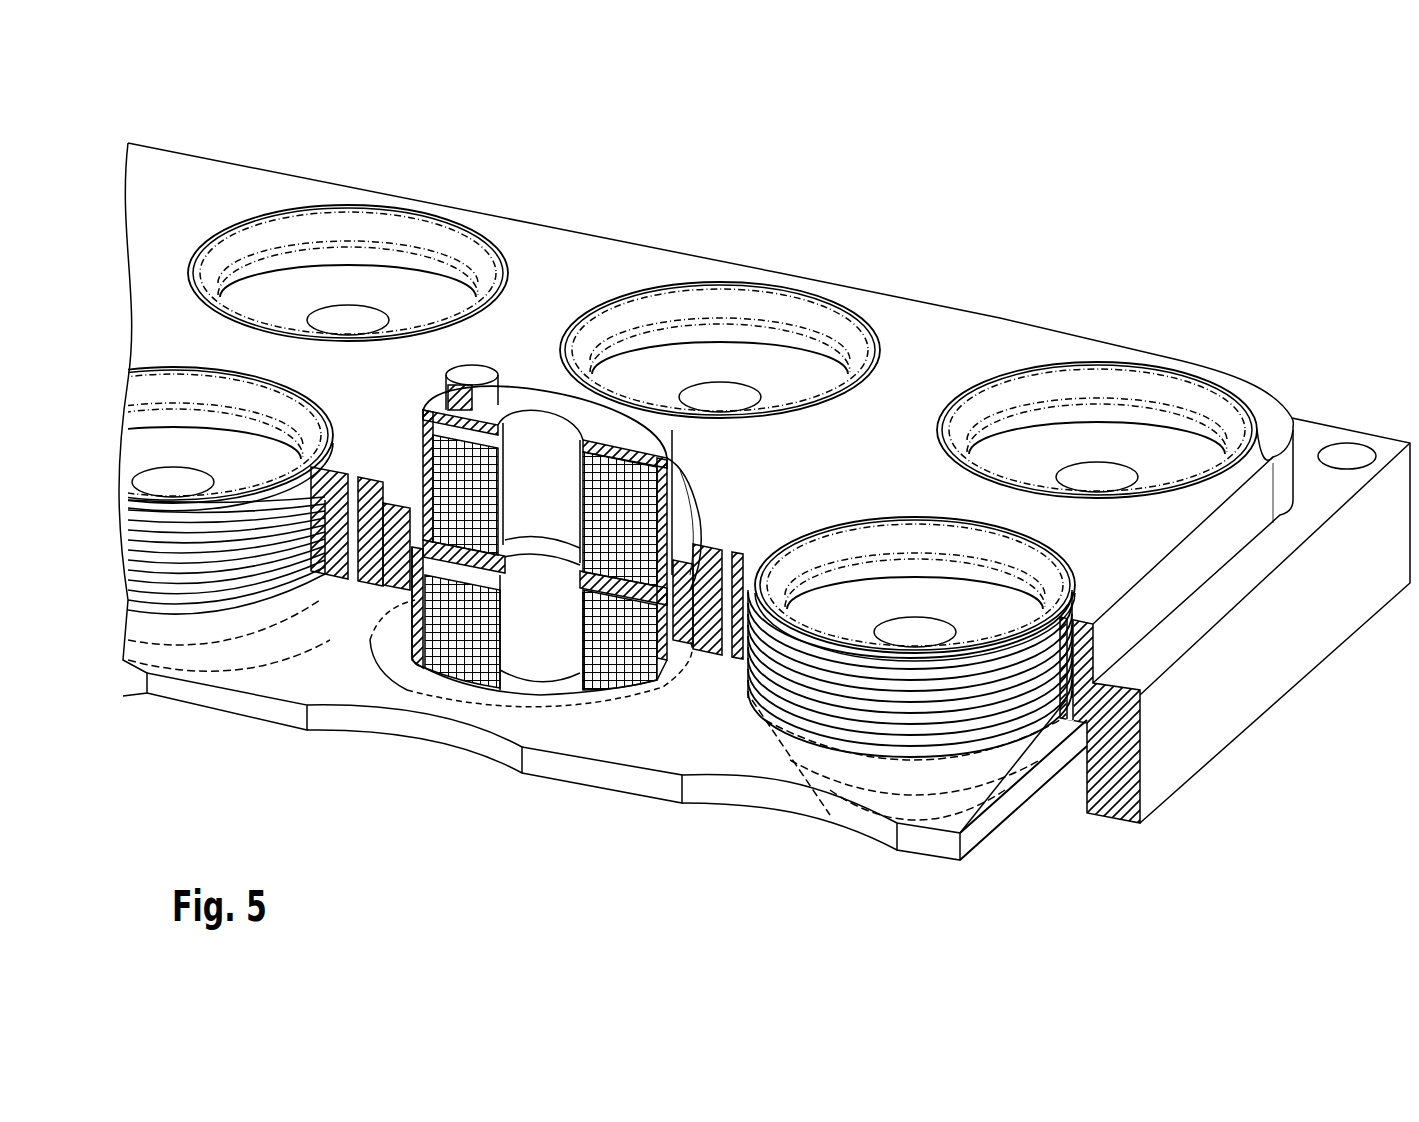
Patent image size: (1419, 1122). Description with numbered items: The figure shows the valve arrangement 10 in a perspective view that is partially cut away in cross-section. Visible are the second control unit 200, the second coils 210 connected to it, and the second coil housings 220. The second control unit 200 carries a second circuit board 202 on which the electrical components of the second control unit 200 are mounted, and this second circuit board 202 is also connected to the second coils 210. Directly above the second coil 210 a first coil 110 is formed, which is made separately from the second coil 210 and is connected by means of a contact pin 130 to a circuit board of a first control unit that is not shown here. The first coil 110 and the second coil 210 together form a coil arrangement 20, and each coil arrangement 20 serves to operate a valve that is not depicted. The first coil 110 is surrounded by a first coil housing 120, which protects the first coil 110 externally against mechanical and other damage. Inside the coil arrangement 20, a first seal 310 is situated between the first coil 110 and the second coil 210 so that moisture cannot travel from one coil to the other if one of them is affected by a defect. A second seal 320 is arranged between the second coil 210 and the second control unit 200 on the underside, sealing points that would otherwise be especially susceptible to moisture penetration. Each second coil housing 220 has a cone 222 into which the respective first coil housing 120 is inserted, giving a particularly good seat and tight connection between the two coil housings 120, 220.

The valve arrangement 10 is at (1307, 828).
The coil arrangement 20 is at (357, 653).
The first coil 110 is at (622, 487).
The first coil housing 120 is at (708, 483).
The contact pin 130 is at (473, 373).
The second control unit 200 is at (1272, 665).
The second circuit board 202 is at (923, 837).
The second coil 210 is at (456, 633).
The second coil housing 220 is at (400, 622).
The cone 222 is at (1128, 388).
The first seal 310 is at (398, 475).
The second seal 320 is at (668, 648).